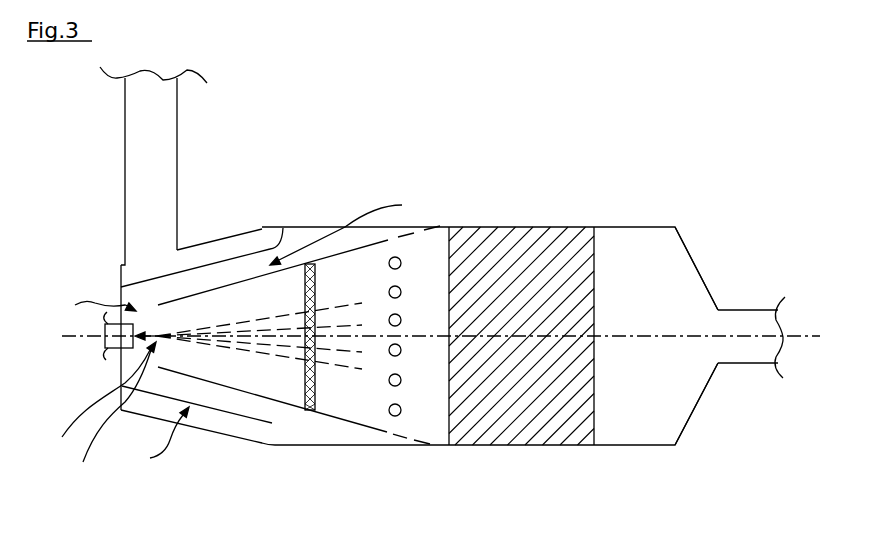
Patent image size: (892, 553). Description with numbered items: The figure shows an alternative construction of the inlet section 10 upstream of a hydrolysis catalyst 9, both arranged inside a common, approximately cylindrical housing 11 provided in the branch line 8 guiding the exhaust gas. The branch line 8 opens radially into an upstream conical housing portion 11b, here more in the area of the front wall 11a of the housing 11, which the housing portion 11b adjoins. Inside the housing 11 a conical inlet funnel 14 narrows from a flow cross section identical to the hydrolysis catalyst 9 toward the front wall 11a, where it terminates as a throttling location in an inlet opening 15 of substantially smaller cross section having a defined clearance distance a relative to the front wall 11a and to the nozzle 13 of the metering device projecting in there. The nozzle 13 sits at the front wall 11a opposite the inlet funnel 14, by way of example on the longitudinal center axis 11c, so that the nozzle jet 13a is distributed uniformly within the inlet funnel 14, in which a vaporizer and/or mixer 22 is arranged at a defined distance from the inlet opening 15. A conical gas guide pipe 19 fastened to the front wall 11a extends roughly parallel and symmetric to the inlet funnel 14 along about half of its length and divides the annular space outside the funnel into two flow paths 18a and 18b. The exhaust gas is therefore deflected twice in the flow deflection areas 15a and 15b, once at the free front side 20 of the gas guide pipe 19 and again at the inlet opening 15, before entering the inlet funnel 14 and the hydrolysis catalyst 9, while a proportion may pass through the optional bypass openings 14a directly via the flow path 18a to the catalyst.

The branch line 8 is at (177, 128).
The hydrolysis catalyst 9 is at (525, 325).
The inlet section 10 is at (156, 441).
The housing 11 is at (620, 222).
The front wall 11a is at (119, 274).
The conical housing portion 11b is at (262, 227).
The longitudinal center axis 11c is at (657, 335).
The nozzle 13 is at (108, 348).
The nozzle jet 13a is at (328, 314).
The inlet funnel 14 is at (217, 384).
The bypass openings 14a is at (401, 350).
The inlet opening 15 is at (113, 421).
The flow deflection area 15a is at (90, 401).
The flow deflection area 15b is at (357, 228).
The flow path 18a is at (222, 425).
The flow path 18b is at (250, 408).
The conical gas guide pipe 19 is at (153, 278).
The free front side 20 is at (284, 231).
The vaporizer and/or mixer 22 is at (315, 400).
The clearance distance a is at (98, 300).